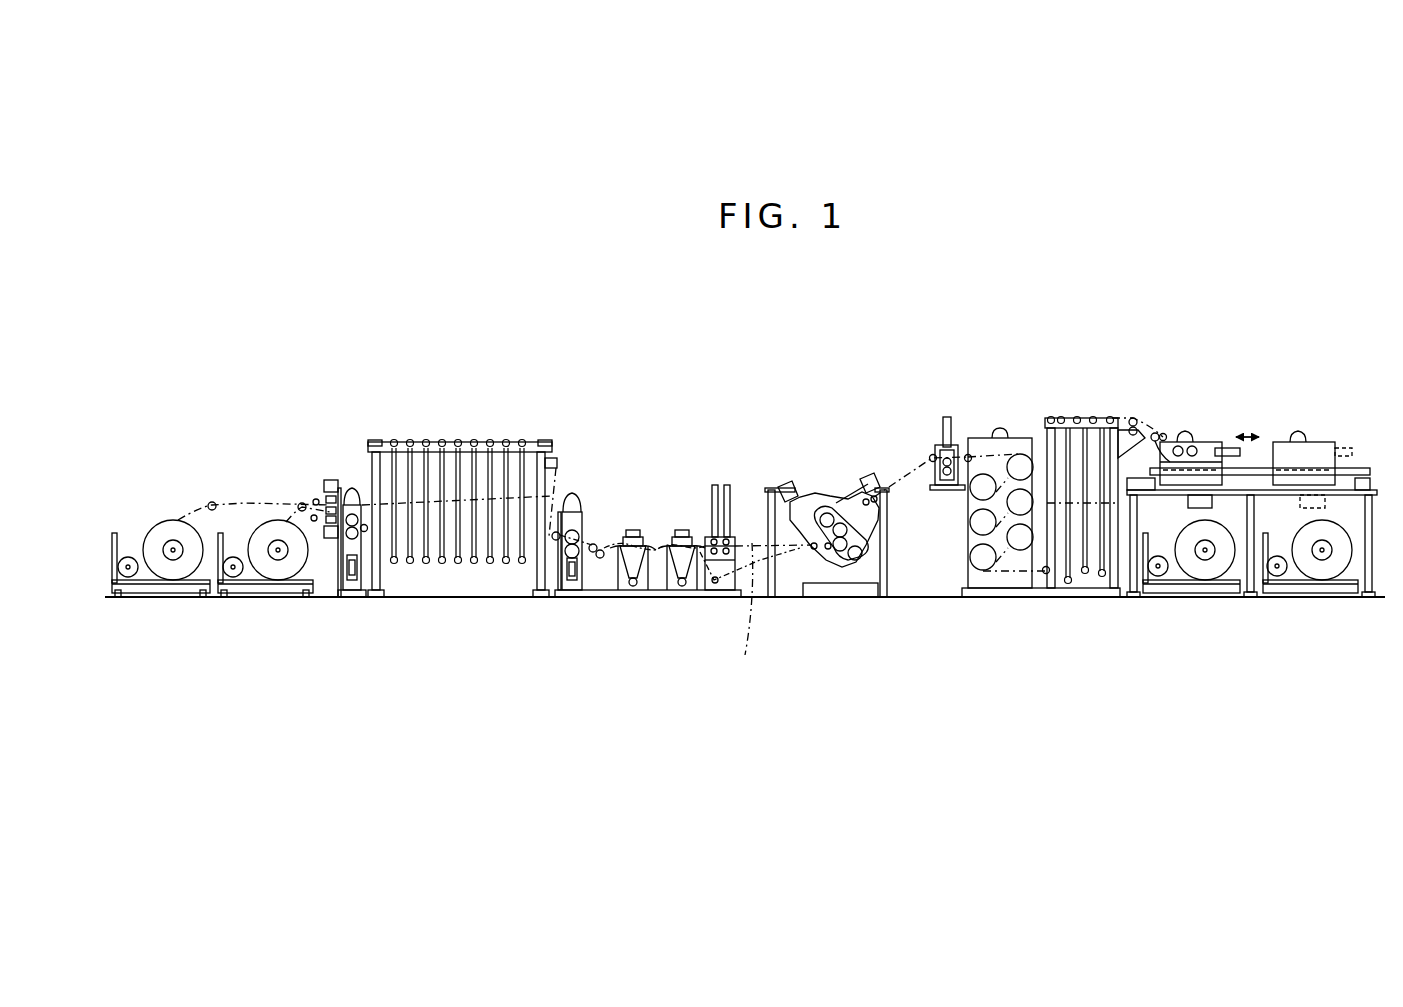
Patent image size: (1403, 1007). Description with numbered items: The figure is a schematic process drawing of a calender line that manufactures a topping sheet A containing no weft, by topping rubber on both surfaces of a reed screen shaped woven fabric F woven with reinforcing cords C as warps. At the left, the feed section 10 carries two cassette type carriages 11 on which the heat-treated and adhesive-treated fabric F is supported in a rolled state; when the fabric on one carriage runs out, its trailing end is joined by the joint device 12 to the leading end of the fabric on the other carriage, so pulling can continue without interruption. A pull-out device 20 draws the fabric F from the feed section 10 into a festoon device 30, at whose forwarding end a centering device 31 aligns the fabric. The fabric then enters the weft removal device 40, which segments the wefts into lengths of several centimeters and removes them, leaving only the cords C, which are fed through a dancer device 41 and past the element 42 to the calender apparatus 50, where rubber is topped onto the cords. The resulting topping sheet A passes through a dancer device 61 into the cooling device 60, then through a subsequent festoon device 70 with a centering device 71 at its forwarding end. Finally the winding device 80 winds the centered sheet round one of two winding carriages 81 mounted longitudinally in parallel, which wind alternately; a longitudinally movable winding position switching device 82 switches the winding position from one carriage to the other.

The feed section 10 is at (228, 608).
The cassette type carriage 11 is at (167, 585).
The joint device 12 is at (320, 498).
The pull-out device 20 is at (353, 492).
The festoon device 30 is at (455, 428).
The centering device 31 is at (557, 468).
The weft removal device 40 is at (641, 603).
The dancer device 41 is at (713, 482).
The roller 42 is at (727, 482).
The calender apparatus 50 is at (822, 470).
The cooling device 60 is at (998, 422).
The dancer device 61 is at (947, 410).
The festoon device 70 is at (1090, 407).
The centering device 71 is at (1138, 418).
The winding device 80 is at (1262, 608).
The winding carriage 81 is at (1182, 585).
The winding position switching device 82 is at (1200, 435).
The reed screen shaped woven fabric F is at (173, 527).
The topping sheet A is at (918, 463).
The cord C is at (743, 614).